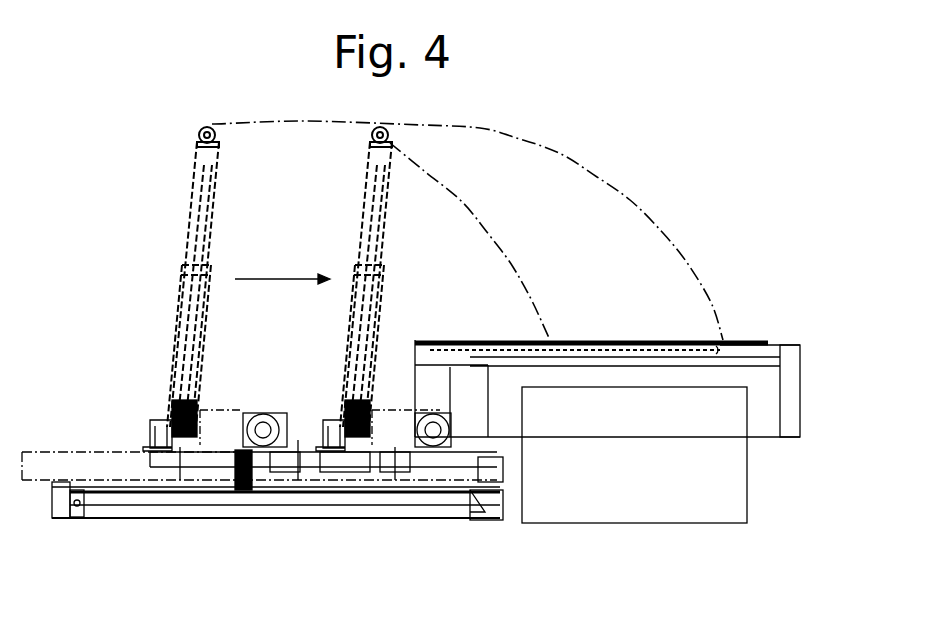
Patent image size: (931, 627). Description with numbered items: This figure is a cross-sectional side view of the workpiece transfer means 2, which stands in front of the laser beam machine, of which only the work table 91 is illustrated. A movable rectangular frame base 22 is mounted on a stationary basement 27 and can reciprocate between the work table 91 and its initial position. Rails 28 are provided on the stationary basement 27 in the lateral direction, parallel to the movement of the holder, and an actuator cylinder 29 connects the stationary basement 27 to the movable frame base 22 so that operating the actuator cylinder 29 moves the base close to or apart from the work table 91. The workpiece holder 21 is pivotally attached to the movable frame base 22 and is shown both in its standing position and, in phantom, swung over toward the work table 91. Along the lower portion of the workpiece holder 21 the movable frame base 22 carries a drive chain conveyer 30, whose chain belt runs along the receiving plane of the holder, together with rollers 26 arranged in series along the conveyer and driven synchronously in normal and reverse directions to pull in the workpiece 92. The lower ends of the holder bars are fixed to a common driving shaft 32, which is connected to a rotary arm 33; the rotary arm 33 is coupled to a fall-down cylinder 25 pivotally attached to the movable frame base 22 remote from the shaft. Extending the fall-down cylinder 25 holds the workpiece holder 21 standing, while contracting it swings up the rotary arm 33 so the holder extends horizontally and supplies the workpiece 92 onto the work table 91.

The workpiece transfer means 2 is at (147, 356).
The workpiece holder 21 is at (207, 235).
The movable rectangular frame base 22 is at (493, 468).
The fall-down cylinder 25 is at (300, 457).
The rollers 26 is at (150, 403).
The stationary basement 27 is at (55, 512).
The rails 28 is at (107, 495).
The actuator cylinder 29 is at (207, 500).
The drive chain conveyer 30 is at (157, 400).
The common driving shaft 32 is at (180, 443).
The rotary arm 33 is at (223, 417).
The work table 91 is at (773, 355).
The workpiece 92 is at (188, 265).